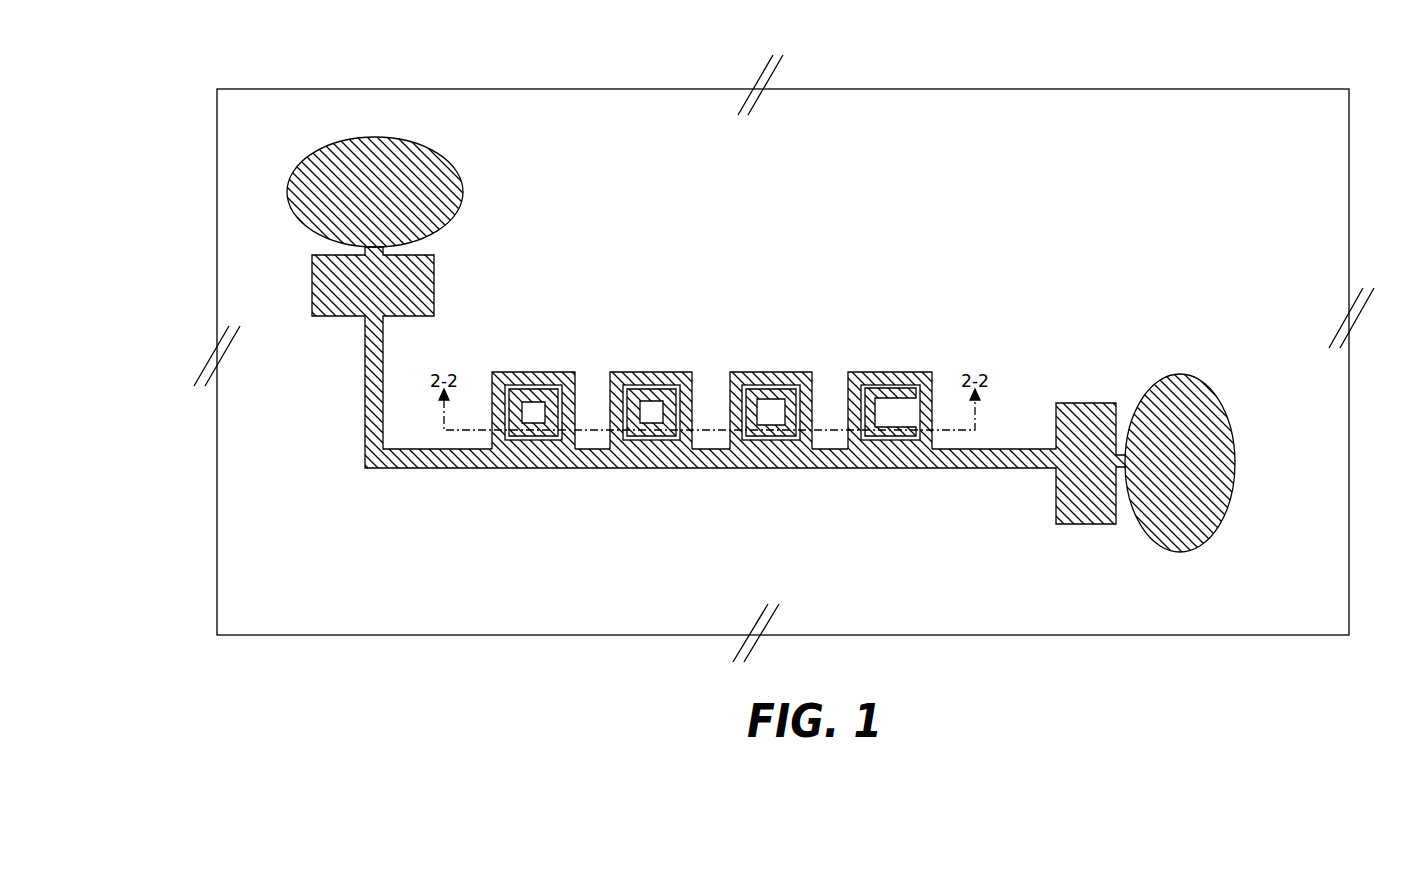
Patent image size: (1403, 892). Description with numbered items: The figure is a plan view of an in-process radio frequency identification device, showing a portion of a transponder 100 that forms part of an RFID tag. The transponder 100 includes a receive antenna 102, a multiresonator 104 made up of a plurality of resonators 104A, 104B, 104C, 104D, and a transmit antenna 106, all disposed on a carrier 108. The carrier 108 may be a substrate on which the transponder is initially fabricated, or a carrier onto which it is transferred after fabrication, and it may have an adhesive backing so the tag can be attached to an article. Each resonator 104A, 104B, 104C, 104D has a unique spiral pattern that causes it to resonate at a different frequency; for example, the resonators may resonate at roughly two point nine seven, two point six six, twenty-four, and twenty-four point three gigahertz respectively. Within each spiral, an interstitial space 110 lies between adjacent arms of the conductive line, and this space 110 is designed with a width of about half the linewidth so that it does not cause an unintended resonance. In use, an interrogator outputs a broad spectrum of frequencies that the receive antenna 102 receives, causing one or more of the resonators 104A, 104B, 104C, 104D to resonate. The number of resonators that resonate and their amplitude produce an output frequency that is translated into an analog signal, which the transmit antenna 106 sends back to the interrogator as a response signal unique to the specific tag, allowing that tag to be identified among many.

The transponder 100 is at (367, 72).
The receive antenna 102 is at (455, 178).
The multiresonator 104 is at (998, 289).
The resonator 104A is at (563, 372).
The resonator 104B is at (680, 372).
The resonator 104C is at (792, 372).
The resonator 104D is at (905, 372).
The transmit antenna 106 is at (1208, 398).
The carrier 108 is at (1140, 108).
The interstitial space 110 is at (866, 400).